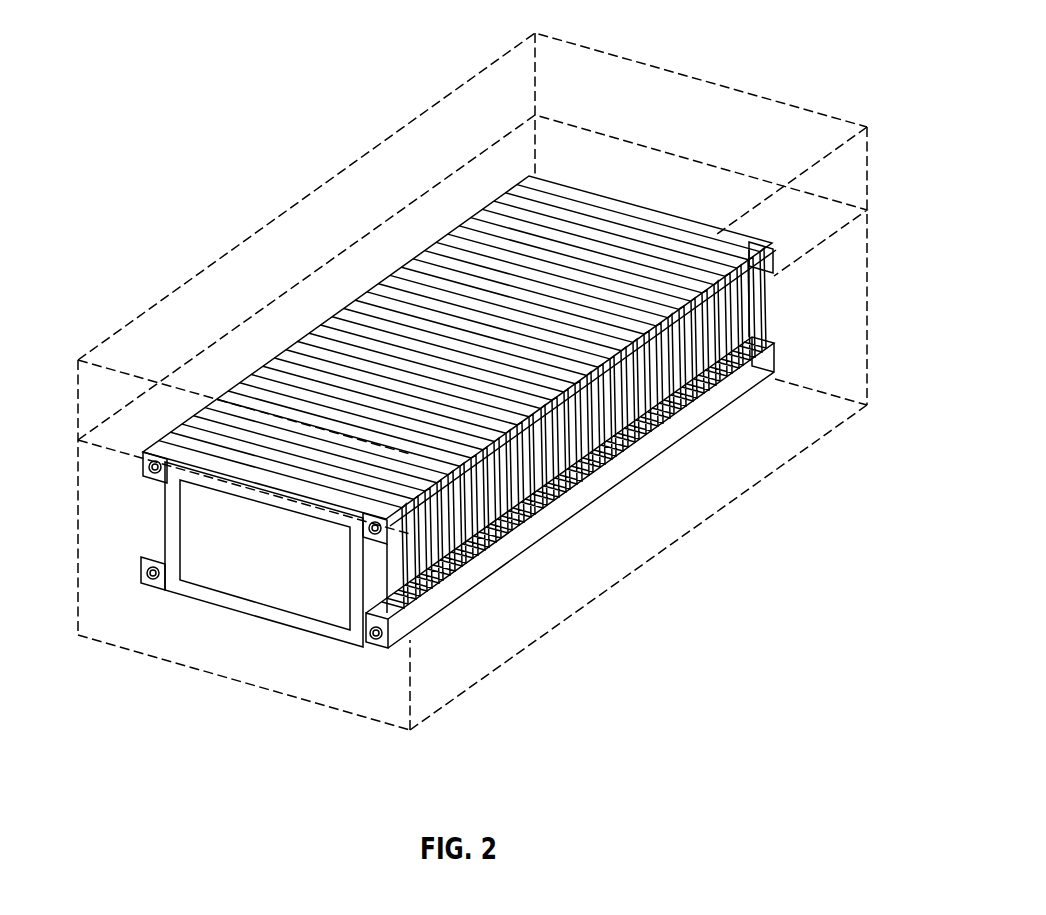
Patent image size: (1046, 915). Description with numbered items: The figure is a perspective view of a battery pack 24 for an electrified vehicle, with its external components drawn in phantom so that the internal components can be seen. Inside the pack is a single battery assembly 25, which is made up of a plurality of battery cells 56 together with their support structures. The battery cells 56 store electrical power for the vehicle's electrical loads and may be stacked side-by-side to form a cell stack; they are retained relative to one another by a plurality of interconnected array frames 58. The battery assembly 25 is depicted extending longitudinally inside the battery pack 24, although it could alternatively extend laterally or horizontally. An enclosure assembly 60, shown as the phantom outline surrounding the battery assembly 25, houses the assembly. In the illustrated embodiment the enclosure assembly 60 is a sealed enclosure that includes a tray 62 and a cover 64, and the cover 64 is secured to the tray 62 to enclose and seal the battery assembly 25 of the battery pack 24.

The battery pack 24 is at (463, 399).
The battery assembly 25 is at (483, 424).
The battery cells 56 is at (248, 575).
The array frames 58 is at (406, 629).
The enclosure assembly 60 is at (78, 360).
The tray 62 is at (345, 709).
The cover 64 is at (860, 183).